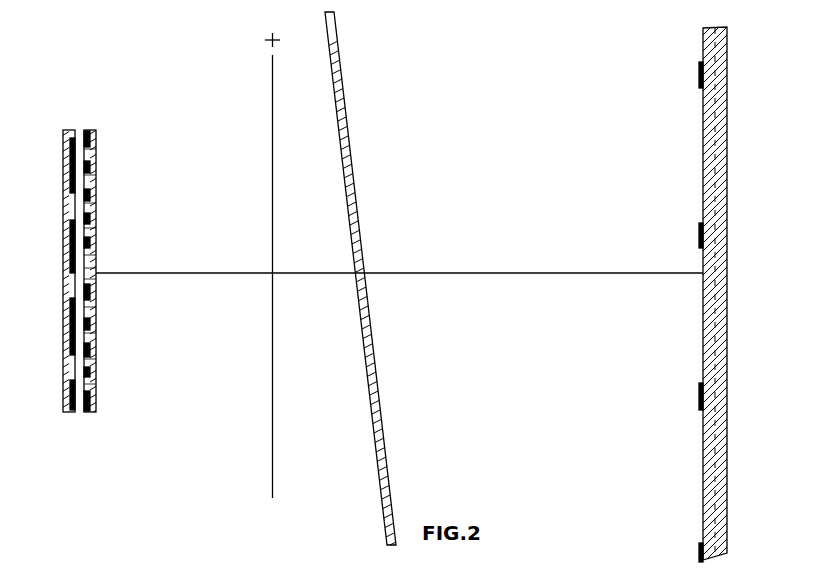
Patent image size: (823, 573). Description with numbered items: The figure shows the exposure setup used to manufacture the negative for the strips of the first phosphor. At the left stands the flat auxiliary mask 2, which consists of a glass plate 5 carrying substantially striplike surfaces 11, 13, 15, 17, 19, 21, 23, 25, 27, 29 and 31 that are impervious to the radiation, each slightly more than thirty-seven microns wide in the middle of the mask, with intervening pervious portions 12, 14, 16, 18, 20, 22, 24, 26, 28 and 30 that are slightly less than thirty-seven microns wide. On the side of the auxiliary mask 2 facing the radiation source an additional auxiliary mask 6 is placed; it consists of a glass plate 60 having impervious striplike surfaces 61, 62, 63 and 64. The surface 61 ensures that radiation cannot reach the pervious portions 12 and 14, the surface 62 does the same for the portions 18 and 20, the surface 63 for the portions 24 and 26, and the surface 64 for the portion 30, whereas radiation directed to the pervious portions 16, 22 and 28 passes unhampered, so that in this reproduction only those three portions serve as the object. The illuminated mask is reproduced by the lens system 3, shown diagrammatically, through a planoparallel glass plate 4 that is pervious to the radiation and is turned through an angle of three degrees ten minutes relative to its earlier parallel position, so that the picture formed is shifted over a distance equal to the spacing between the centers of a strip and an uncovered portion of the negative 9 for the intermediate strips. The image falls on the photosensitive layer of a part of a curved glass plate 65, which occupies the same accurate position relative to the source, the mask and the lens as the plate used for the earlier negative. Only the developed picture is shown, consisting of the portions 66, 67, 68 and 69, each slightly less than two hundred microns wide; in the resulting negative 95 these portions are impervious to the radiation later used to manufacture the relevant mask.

The auxiliary mask 2 is at (96, 424).
The lens system 3 is at (272, 252).
The planoparallel glass plate 4 is at (333, 52).
The glass plate 5 is at (92, 128).
The additional auxiliary mask 6 is at (69, 424).
The negative for the intermediate strips 9 is at (679, 24).
The striplike surface 11 is at (96, 141).
The pervious portion 12 is at (96, 155).
The striplike surface 13 is at (96, 167).
The pervious portion 14 is at (96, 181).
The striplike surface 15 is at (96, 194).
The pervious portion 16 is at (96, 207).
The striplike surface 17 is at (96, 220).
The pervious portion 18 is at (96, 234).
The striplike surface 19 is at (96, 247).
The pervious portion 20 is at (96, 260).
The striplike surface 21 is at (96, 273).
The pervious portion 22 is at (96, 282).
The striplike surface 23 is at (96, 297).
The pervious portion 24 is at (96, 310).
The striplike surface 25 is at (96, 322).
The pervious portion 26 is at (96, 335).
The striplike surface 27 is at (96, 348).
The pervious portion 28 is at (96, 360).
The striplike surface 29 is at (96, 373).
The pervious portion 30 is at (96, 386).
The striplike surface 31 is at (96, 400).
The glass plate 60 is at (66, 128).
The striplike surface 61 is at (70, 163).
The striplike surface 62 is at (70, 240).
The striplike surface 63 is at (70, 318).
The striplike surface 64 is at (70, 392).
The curved glass plate 65 is at (715, 145).
The portion 66 is at (699, 77).
The portion 67 is at (699, 238).
The portion 68 is at (699, 396).
The portion 69 is at (699, 552).
The negative for the strips of the first phosphor 95 is at (690, 500).